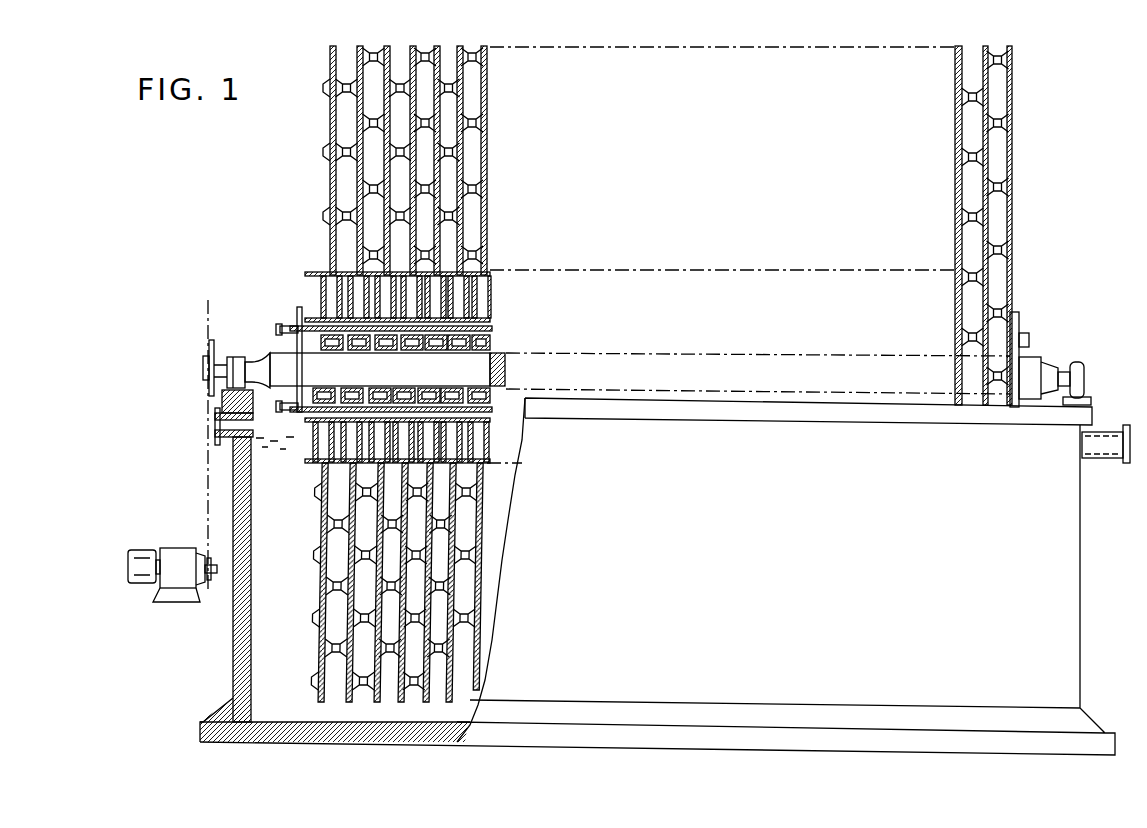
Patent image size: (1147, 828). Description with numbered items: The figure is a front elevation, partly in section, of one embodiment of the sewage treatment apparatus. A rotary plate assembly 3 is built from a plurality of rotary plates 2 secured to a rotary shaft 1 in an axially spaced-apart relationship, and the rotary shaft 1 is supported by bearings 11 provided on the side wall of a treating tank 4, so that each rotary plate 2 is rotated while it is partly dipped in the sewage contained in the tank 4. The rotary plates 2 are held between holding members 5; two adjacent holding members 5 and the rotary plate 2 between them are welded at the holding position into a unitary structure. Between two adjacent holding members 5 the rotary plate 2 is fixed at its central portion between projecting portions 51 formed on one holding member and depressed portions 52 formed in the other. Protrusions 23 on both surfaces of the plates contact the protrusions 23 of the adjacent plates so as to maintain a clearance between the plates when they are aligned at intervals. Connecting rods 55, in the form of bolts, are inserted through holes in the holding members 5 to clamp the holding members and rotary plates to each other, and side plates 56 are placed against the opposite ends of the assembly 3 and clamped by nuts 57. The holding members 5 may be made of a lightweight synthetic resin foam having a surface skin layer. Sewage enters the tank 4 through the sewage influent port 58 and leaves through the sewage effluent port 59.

The rotary shaft 1 is at (288, 350).
The rotary plate 2 is at (357, 50).
The rotary plate assembly 3 is at (462, 44).
The treating tank 4 is at (255, 640).
The holding member 5 is at (378, 334).
The bearing 11 is at (208, 375).
The protrusion 23 is at (353, 96).
The projecting portion 51 is at (338, 278).
The depressed portion 52 is at (312, 280).
The connecting rod 55 is at (306, 305).
The side plate 56 is at (298, 312).
The nut 57 is at (280, 330).
The sewage influent port 58 is at (215, 425).
The sewage effluent port 59 is at (1103, 460).